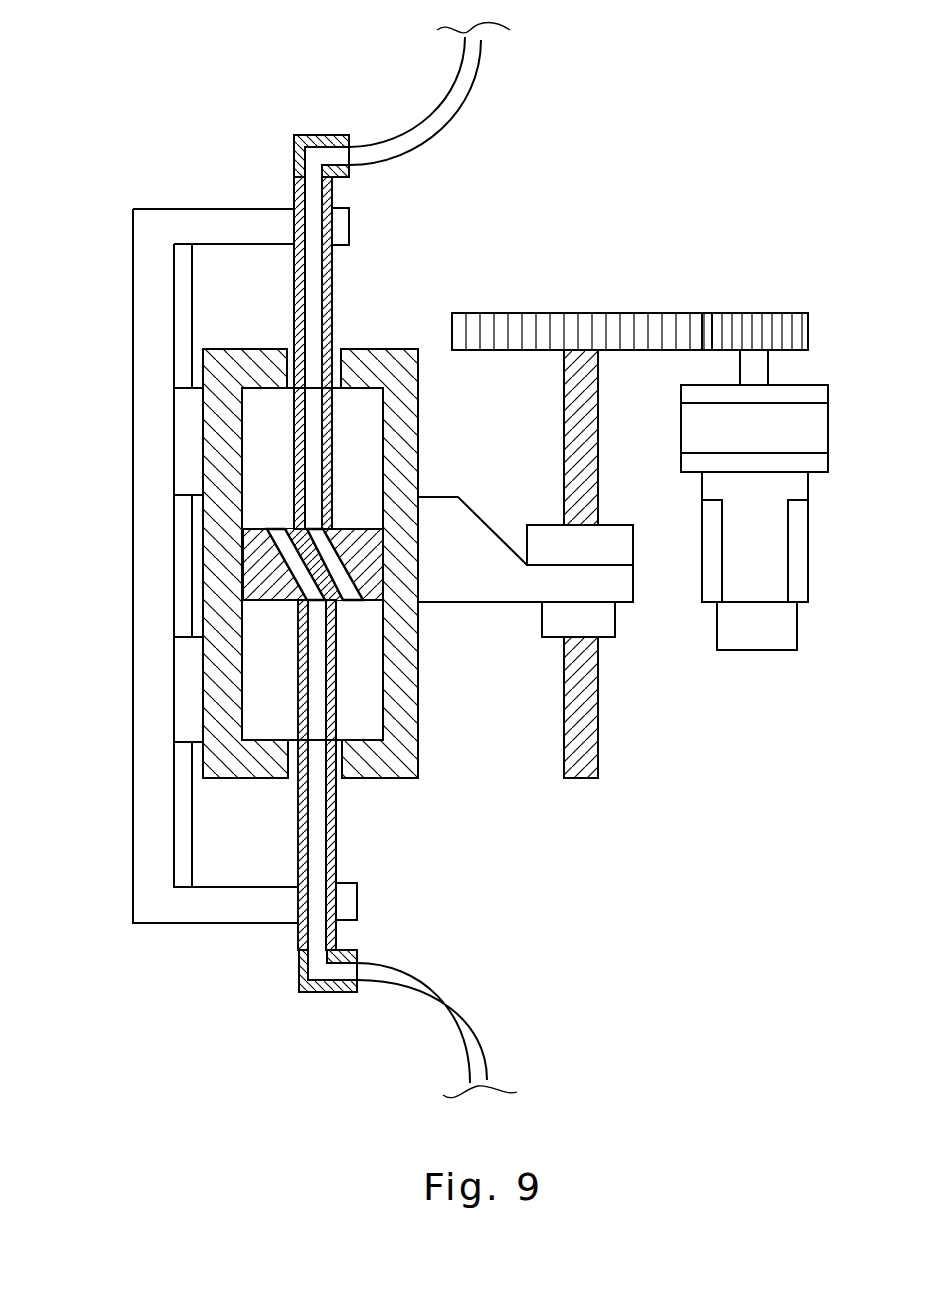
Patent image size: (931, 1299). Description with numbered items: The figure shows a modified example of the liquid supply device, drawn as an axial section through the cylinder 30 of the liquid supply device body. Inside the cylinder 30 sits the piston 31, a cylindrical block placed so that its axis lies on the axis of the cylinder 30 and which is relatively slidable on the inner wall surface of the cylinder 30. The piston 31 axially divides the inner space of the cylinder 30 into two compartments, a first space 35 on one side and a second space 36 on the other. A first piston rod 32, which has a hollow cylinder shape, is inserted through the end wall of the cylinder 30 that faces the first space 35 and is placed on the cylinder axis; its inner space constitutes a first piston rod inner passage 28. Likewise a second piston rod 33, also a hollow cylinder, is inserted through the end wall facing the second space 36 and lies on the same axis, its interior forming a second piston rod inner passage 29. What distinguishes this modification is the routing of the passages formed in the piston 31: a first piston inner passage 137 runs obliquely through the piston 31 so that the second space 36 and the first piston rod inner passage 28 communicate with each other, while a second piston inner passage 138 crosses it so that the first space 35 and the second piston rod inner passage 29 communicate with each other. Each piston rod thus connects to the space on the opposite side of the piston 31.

The first piston rod inner passage 28 is at (313, 274).
The second piston rod inner passage 29 is at (317, 866).
The cylinder 30 is at (418, 762).
The piston 31 is at (270, 560).
The first piston rod 32 is at (326, 263).
The second piston rod 33 is at (336, 840).
The first space 35 is at (360, 450).
The second space 36 is at (365, 687).
The first piston inner passage 137 is at (327, 554).
The second piston inner passage 138 is at (287, 587).